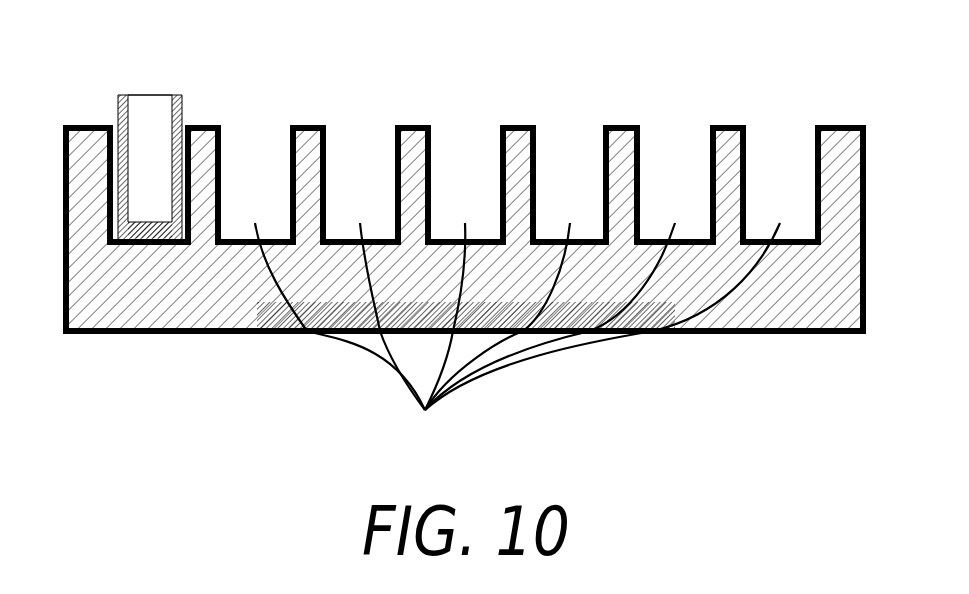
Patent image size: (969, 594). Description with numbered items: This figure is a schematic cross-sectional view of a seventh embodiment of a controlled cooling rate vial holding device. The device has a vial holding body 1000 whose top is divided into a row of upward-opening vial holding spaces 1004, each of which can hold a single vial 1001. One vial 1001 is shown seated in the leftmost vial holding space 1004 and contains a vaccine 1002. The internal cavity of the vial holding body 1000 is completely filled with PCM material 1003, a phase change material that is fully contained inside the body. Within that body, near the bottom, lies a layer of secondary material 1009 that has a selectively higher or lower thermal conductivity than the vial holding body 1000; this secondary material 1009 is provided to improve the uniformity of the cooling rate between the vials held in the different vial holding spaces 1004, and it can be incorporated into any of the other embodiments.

The vial holding body 1000 is at (838, 127).
The vial 1001 is at (158, 117).
The vaccine 1002 is at (147, 226).
The PCM material 1003 is at (97, 305).
The vial holding space 1004 is at (517, 329).
The secondary material 1009 is at (272, 320).